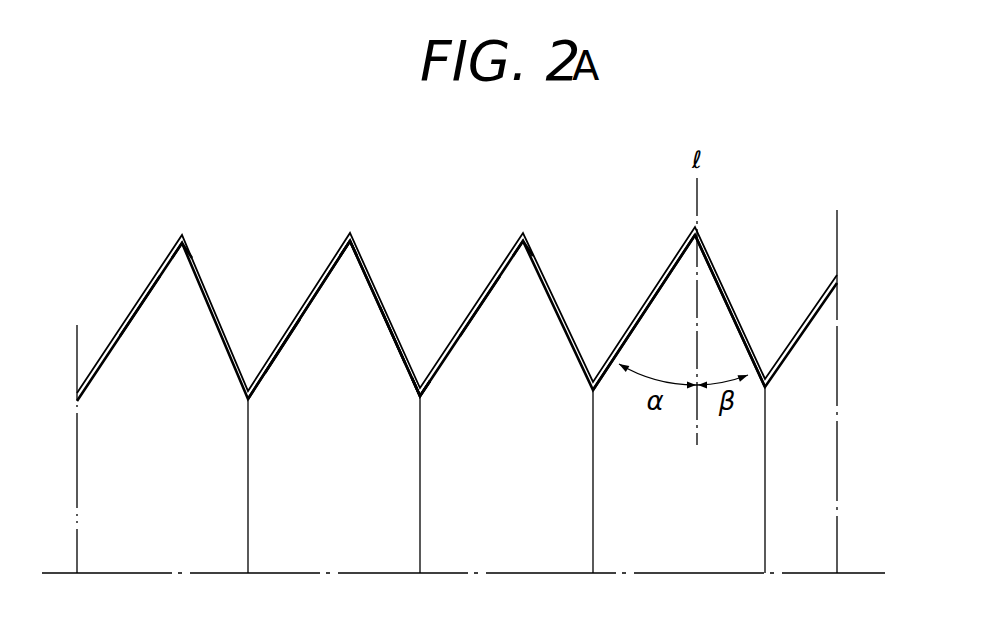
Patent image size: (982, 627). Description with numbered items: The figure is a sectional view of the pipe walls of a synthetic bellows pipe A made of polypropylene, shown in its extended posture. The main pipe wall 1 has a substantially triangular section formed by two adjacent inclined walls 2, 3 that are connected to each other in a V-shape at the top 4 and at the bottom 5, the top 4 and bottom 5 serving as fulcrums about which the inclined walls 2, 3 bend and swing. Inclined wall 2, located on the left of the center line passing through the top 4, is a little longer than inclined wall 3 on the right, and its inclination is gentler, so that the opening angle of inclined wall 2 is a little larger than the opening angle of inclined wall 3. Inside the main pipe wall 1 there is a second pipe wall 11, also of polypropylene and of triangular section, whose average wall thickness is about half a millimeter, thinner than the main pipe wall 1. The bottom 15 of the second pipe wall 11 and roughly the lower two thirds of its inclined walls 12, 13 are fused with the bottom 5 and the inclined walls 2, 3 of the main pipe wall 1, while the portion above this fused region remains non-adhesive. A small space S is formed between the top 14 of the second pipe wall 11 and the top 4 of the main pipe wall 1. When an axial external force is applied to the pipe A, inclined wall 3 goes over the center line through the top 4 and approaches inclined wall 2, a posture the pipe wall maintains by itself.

The main pipe wall 1 is at (277, 181).
The inclined wall 2 is at (318, 289).
The inclined wall 3 is at (374, 290).
The top portion 4 is at (350, 240).
The bottom 5 is at (421, 387).
The second pipe wall 11 is at (813, 408).
The inclined wall 12 is at (285, 343).
The inclined wall 13 is at (387, 330).
The top 14 is at (488, 297).
The bottom 15 is at (421, 398).
The synthetic bellows pipe A is at (143, 266).
The small space S is at (181, 242).